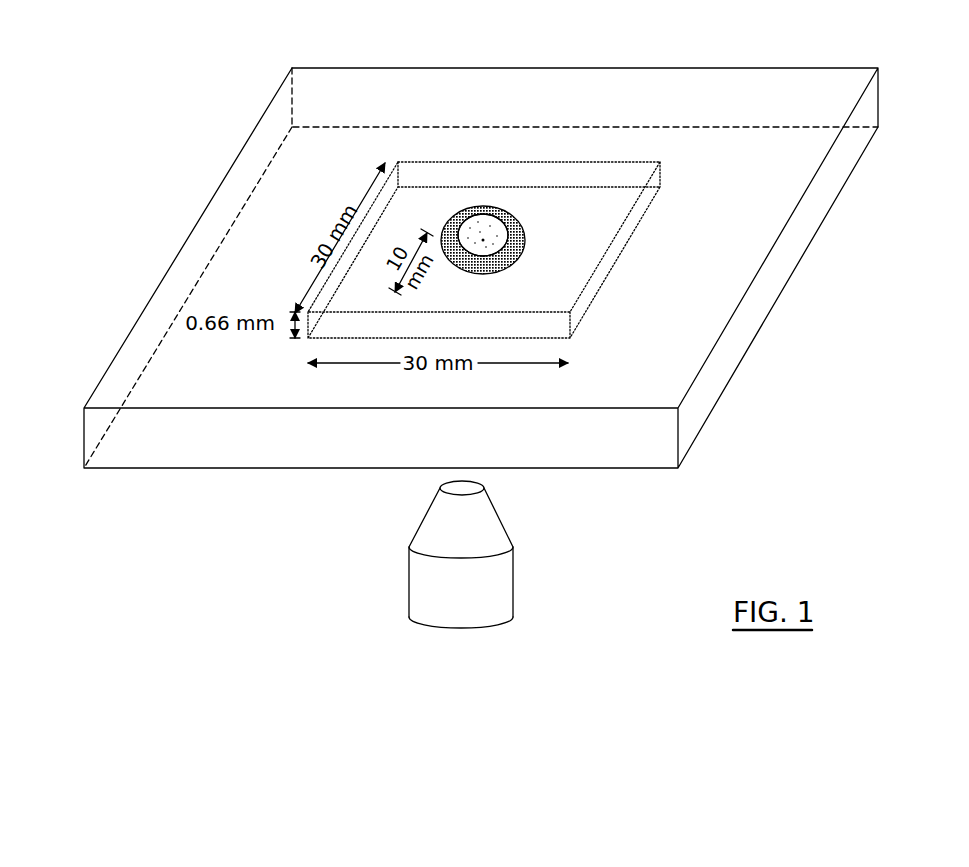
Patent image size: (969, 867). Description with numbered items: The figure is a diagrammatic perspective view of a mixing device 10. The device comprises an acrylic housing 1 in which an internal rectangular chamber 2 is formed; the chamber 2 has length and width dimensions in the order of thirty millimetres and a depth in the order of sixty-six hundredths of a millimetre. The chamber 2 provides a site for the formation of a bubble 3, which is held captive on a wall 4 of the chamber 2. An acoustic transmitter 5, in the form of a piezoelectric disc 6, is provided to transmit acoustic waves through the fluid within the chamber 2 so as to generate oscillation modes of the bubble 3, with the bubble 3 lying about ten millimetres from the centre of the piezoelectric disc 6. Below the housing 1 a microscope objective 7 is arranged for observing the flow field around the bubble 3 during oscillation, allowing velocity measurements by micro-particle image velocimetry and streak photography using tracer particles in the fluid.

The acrylic housing 1 is at (735, 340).
The internal rectangular chamber 2 is at (490, 191).
The bubble 3 is at (487, 242).
The wall 4 is at (543, 296).
The acoustic transmitter 5 is at (460, 285).
The piezoelectric disc 6 is at (460, 213).
The microscope objective 7 is at (462, 543).
The mixing device 10 is at (461, 309).